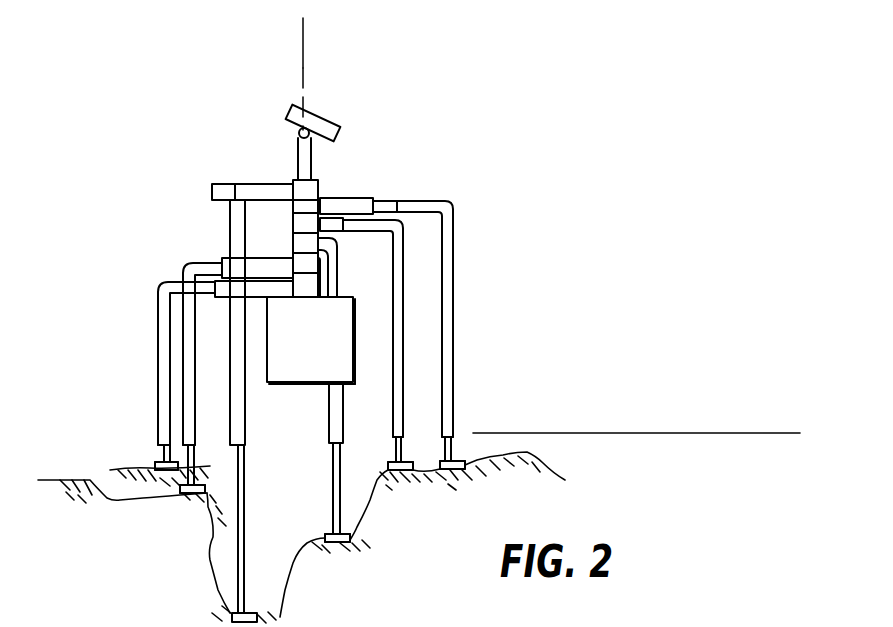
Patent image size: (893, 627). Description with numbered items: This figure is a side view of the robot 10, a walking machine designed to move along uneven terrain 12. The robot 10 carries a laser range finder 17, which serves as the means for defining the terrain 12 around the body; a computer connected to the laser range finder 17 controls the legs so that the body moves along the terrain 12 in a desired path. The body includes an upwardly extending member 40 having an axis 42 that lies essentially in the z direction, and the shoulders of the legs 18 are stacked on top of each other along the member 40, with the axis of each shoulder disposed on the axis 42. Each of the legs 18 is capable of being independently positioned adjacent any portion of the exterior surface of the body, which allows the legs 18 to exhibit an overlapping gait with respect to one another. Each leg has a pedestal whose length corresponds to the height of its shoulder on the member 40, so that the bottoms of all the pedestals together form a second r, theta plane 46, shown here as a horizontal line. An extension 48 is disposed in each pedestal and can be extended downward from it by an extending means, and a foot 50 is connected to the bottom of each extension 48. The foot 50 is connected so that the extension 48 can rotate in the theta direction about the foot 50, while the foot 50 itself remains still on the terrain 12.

The robot 10 is at (195, 167).
The terrain 12 is at (173, 585).
The laser range finder 17 is at (323, 123).
The legs 18 is at (413, 196).
The member 40 is at (298, 157).
The axis 42 is at (300, 88).
The second r, θ plane 46 is at (502, 433).
The extension 48 is at (245, 540).
The foot 50 is at (158, 472).